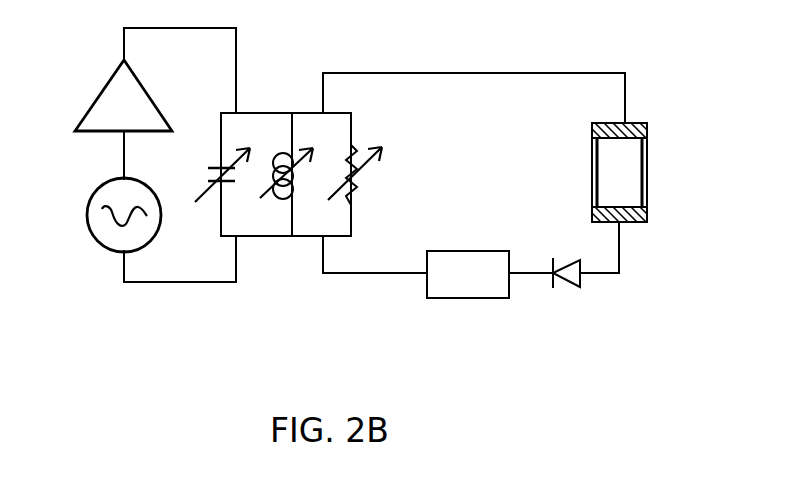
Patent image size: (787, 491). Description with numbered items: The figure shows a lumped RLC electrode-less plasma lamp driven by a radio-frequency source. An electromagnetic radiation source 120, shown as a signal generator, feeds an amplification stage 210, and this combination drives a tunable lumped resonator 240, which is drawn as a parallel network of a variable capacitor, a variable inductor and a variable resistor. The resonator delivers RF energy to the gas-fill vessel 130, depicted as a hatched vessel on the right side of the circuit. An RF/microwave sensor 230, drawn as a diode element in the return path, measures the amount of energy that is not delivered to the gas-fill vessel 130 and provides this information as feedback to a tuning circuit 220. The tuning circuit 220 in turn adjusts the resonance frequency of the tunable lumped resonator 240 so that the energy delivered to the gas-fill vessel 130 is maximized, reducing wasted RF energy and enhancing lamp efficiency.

The electromagnetic radiation source 120 is at (93, 191).
The gas-fill vessel 130 is at (647, 193).
The amplification stage 210 is at (107, 107).
The tuning circuit 220 is at (457, 288).
The RF/microwave sensor 230 is at (572, 287).
The tunable lumped resonator 240 is at (310, 232).